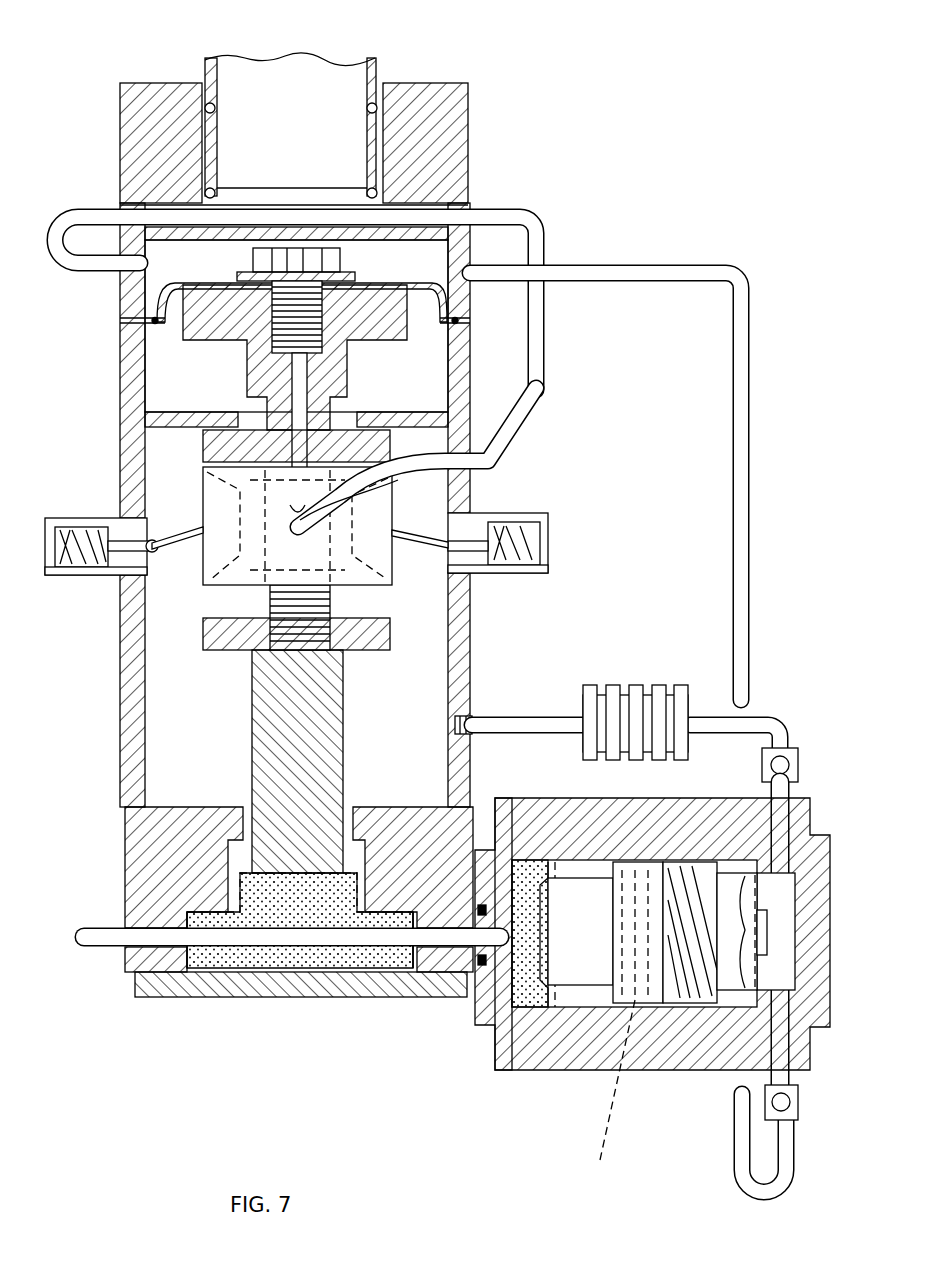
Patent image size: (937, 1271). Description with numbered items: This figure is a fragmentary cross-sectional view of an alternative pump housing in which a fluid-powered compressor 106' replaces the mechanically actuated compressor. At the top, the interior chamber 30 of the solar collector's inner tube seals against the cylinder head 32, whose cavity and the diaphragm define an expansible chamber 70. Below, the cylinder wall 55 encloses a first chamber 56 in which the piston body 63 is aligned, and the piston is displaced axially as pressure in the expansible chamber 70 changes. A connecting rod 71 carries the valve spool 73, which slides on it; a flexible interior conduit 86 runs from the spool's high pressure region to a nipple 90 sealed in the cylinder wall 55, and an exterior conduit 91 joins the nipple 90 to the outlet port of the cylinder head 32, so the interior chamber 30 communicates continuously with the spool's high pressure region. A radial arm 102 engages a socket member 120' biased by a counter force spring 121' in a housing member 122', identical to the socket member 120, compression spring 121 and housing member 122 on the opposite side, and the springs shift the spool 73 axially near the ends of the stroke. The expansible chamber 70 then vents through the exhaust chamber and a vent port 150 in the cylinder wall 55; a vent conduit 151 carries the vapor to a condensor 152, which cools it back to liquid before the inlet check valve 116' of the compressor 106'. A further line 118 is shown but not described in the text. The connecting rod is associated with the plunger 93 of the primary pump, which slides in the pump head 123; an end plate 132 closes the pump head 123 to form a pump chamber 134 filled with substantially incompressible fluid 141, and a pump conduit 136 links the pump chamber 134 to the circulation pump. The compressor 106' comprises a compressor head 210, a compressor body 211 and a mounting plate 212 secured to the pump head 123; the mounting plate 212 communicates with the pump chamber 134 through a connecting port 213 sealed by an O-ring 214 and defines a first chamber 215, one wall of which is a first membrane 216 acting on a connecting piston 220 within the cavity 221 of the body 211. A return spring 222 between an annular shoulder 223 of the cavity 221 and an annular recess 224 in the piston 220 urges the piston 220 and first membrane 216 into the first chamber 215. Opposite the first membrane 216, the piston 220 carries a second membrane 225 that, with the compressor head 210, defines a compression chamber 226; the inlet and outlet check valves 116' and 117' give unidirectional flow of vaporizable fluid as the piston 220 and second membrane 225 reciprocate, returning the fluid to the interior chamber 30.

The interior chamber 30 is at (298, 72).
The cylinder head 32 is at (120, 105).
The cylinder wall 55 is at (474, 628).
The first chamber 56 is at (210, 378).
The piston body 63 is at (342, 384).
The expansible chamber 70 is at (404, 272).
The connecting rod 71 is at (260, 602).
The valve spool 73 is at (210, 585).
The flexible interior conduit 86 is at (440, 500).
The nipple 90 is at (474, 452).
The exterior conduit 91 is at (490, 210).
The plunger 93 is at (250, 682).
The radial arm 102 is at (432, 550).
The fluid-powered compressor 106' is at (620, 973).
The inlet check valve 116' is at (787, 683).
The outlet check valve 117' is at (715, 1041).
The conduit 118 is at (645, 270).
The socket member 120 is at (96, 503).
The compression spring 121 is at (98, 521).
The housing member 122 is at (96, 596).
The socket member 120' is at (523, 521).
The counter force spring 121' is at (540, 538).
The housing member 122' is at (532, 584).
The pump head 123 is at (125, 830).
The end plate 132 is at (140, 996).
The pump chamber 134 is at (200, 960).
The pump conduit 136 is at (108, 925).
The substantially incompressible fluid 141 is at (238, 965).
The vent port 150 is at (455, 728).
The vent conduit 151 is at (500, 722).
The condensor 152 is at (580, 695).
The compressor head 210 is at (832, 840).
The compressor body 211 is at (680, 862).
The mounting plate 212 is at (498, 797).
The connecting port 213 is at (400, 975).
The O-ring 214 is at (435, 975).
The first chamber 215 is at (512, 1000).
The first membrane 216 is at (550, 858).
The connecting piston 220 is at (590, 970).
The cavity 221 is at (625, 862).
The return spring 222 is at (695, 797).
The annular shoulder 223 is at (692, 1010).
The annular recess 224 is at (599, 1086).
The second membrane 225 is at (732, 1000).
The compression chamber 226 is at (828, 1045).